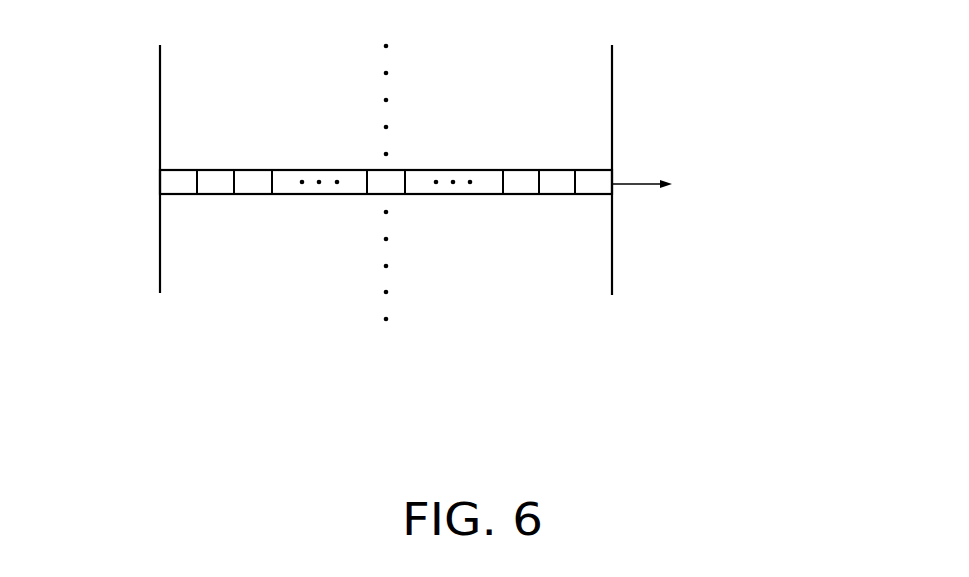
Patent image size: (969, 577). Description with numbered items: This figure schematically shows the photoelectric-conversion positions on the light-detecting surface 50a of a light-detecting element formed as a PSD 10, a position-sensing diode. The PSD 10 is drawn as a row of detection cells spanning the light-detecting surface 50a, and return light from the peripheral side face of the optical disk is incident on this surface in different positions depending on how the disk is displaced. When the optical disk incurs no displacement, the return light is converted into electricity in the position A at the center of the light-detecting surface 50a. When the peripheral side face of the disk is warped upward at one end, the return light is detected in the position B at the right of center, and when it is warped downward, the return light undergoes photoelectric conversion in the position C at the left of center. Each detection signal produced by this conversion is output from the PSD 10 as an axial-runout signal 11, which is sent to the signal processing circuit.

The PSD 10 is at (210, 160).
The axial-runout signal 11 is at (760, 199).
The light-detecting surface 50a is at (597, 66).
The position A is at (393, 185).
The position B is at (518, 185).
The position C is at (252, 185).